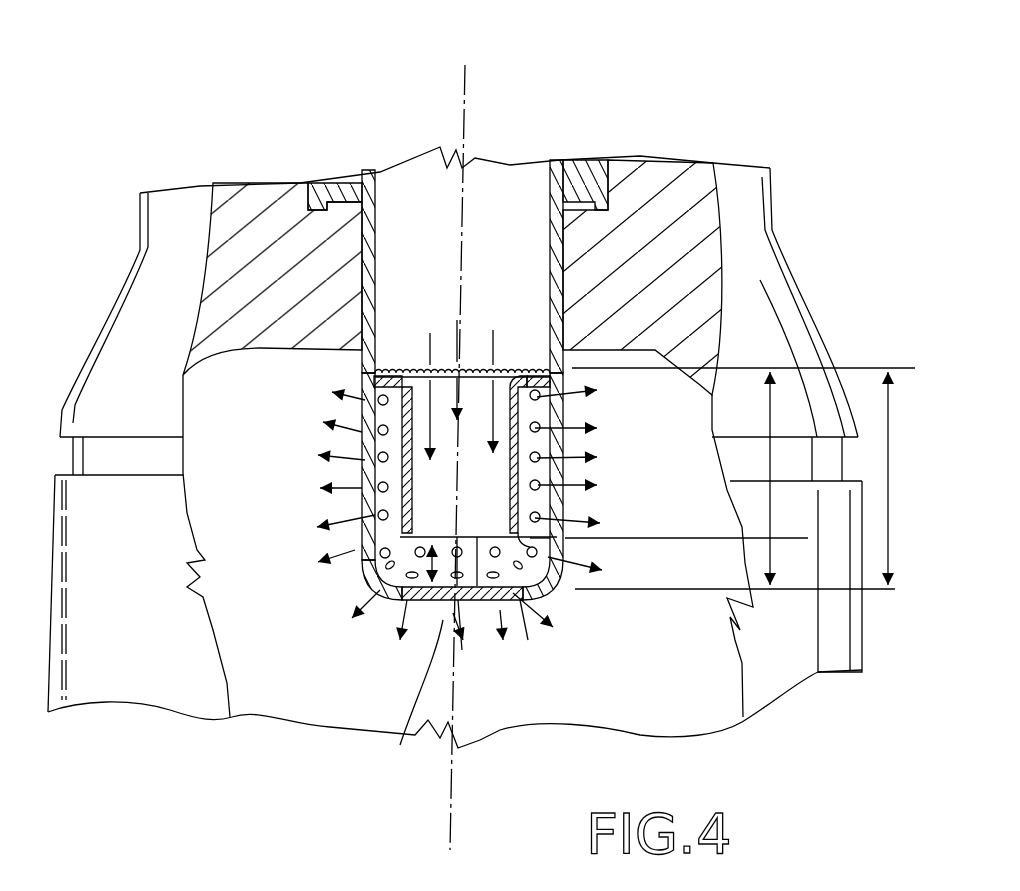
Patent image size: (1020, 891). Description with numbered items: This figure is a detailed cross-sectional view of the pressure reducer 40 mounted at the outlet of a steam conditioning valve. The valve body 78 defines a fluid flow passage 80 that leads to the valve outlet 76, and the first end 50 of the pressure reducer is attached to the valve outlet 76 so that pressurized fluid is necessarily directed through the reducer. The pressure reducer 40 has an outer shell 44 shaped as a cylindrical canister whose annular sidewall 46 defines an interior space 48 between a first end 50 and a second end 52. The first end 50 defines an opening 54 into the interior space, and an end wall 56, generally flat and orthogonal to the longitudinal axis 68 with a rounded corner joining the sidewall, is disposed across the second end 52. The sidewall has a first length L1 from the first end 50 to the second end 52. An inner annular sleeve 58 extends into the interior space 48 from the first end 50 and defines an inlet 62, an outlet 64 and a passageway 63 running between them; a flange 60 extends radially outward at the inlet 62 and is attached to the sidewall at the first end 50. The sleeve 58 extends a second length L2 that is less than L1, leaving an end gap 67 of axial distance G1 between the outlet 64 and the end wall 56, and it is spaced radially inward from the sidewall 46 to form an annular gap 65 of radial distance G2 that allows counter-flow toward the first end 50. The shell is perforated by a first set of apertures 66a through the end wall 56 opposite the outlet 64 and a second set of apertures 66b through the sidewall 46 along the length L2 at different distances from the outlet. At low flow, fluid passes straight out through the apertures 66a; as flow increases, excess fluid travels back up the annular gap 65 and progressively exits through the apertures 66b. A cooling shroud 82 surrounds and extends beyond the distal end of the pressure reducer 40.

The pressure reducer 40 is at (484, 579).
The outer shell 44 is at (565, 575).
The annular sidewall 46 is at (563, 500).
The interior space 48 is at (500, 494).
The first end 50 is at (360, 373).
The second end 52 is at (358, 580).
The opening 54 is at (540, 337).
The end wall 56 is at (477, 600).
The inner annular sleeve 58 is at (520, 445).
The flange 60 is at (380, 370).
The inlet 62 is at (503, 383).
The passageway 63 is at (478, 460).
The outlet 64 is at (472, 597).
The annular gap 65 is at (540, 410).
The first set of apertures 66a is at (412, 580).
The second set of apertures 66b is at (378, 400).
The end gap 67 is at (508, 585).
The longitudinal axis 68 is at (465, 100).
The valve outlet 76 is at (473, 350).
The valve body 78 is at (223, 197).
The fluid flow passage 80 is at (432, 225).
The cooling shroud 82 is at (128, 670).
The axial distance G1 is at (407, 702).
The radial distance G2 is at (358, 537).
The first length L1 is at (892, 478).
The second length L2 is at (743, 478).